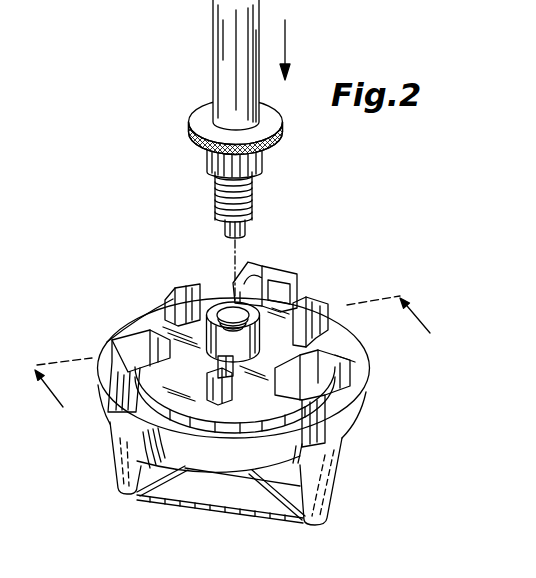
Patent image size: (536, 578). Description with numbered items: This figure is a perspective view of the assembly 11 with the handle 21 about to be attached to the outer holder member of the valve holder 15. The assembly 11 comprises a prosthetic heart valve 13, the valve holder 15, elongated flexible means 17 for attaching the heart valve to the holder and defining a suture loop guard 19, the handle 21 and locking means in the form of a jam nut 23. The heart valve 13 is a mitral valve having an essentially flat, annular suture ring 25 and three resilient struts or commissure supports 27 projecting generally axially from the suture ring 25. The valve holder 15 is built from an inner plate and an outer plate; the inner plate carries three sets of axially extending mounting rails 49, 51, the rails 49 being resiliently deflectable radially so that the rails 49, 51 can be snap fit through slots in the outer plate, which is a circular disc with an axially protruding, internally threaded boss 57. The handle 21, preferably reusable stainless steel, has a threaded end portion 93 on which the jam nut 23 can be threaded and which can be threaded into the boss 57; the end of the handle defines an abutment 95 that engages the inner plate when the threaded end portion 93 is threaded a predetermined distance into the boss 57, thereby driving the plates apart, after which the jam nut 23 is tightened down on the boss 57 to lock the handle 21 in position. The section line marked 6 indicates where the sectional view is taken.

The assembly 11 is at (135, 280).
The prosthetic heart valve 13 is at (108, 503).
The valve holder 15 is at (152, 307).
The elongated flexible means 17 is at (110, 342).
The suture loop guard 19 is at (270, 487).
The handle 21 is at (218, 27).
The jam nut 23 is at (193, 107).
The suture ring 25 is at (371, 366).
The commissure supports 27 is at (127, 448).
The mounting rails 49 is at (168, 296).
The mounting rails 51 is at (236, 282).
The internally threaded boss 57 is at (306, 293).
The threaded end portion 93 is at (253, 190).
The abutment 95 is at (246, 232).
The section line 6- 6 is at (226, 335).